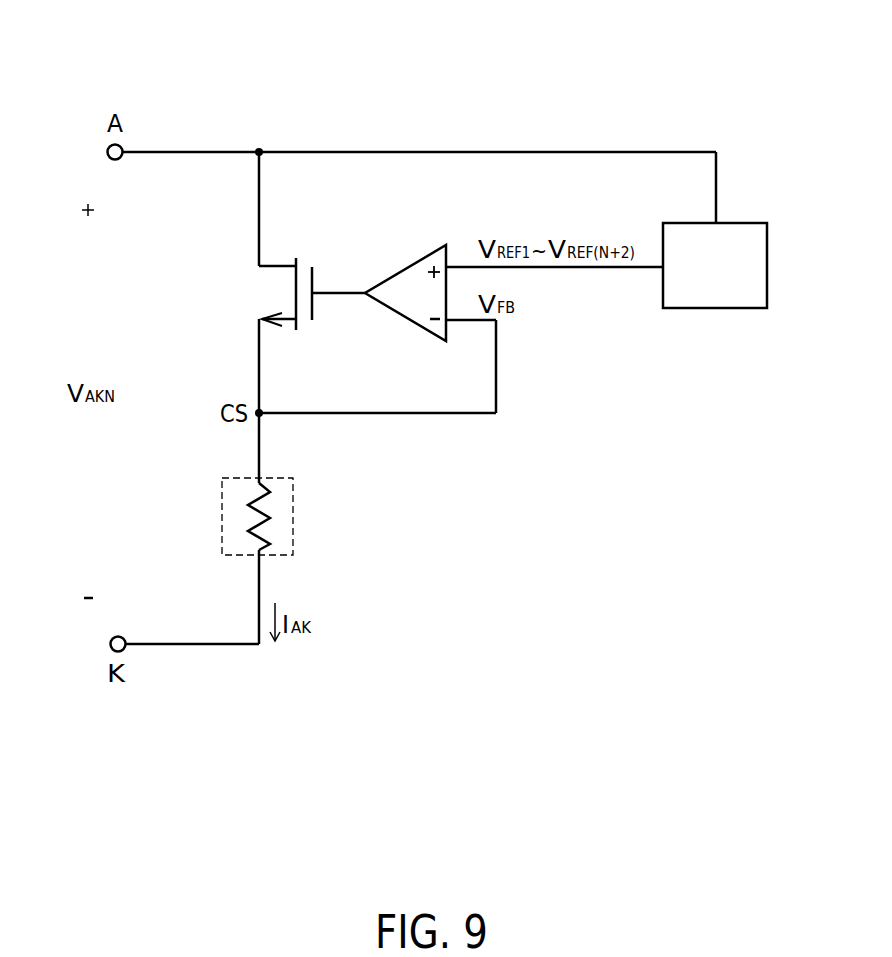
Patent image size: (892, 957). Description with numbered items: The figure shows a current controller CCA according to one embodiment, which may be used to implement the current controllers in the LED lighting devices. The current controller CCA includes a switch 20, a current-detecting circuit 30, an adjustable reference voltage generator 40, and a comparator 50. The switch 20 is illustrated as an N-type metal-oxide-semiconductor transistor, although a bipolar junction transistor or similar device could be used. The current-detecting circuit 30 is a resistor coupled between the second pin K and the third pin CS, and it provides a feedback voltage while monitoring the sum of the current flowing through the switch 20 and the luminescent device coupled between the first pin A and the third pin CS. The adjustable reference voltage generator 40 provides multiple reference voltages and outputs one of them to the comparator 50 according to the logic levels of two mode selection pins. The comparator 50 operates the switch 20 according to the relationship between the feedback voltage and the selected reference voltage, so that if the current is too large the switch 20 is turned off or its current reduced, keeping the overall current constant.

The switch 20 is at (265, 294).
The current-detecting circuit 30 is at (294, 518).
The adjustable reference voltage generator 40 is at (727, 278).
The comparator 50 is at (403, 268).
The current controller CCA is at (712, 55).